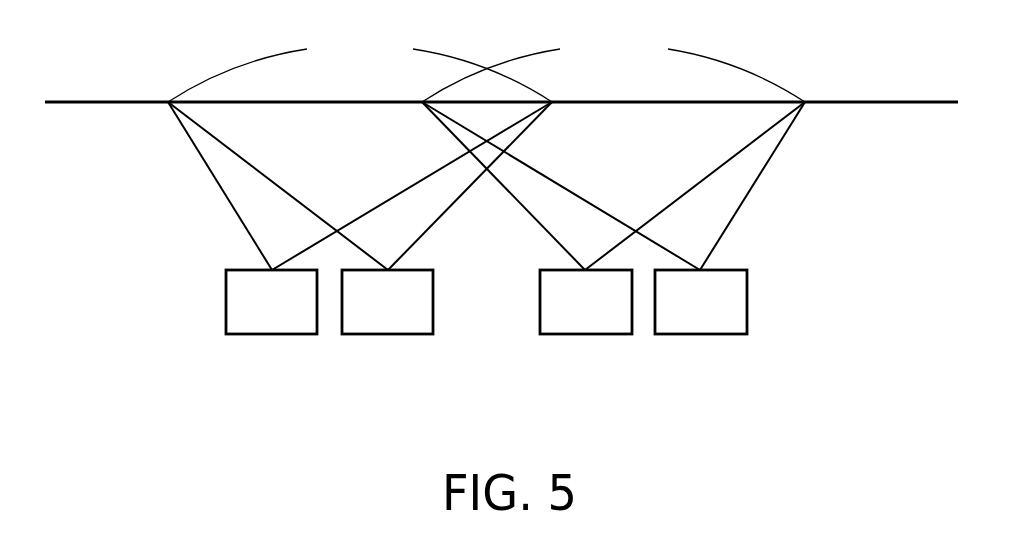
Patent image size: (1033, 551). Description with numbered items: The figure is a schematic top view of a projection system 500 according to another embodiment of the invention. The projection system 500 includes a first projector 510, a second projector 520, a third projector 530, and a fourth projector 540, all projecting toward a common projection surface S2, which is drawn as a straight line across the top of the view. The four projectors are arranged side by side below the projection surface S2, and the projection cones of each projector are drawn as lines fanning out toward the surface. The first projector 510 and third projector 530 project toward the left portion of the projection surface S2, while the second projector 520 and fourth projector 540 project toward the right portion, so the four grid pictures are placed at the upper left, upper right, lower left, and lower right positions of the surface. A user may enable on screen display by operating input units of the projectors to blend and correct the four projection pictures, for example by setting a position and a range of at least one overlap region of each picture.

The projection system 500 is at (501, 249).
The first projector 510 is at (272, 334).
The second projector 520 is at (585, 334).
The third projector 530 is at (388, 334).
The fourth projector 540 is at (700, 334).
The projection surface S2 is at (878, 106).